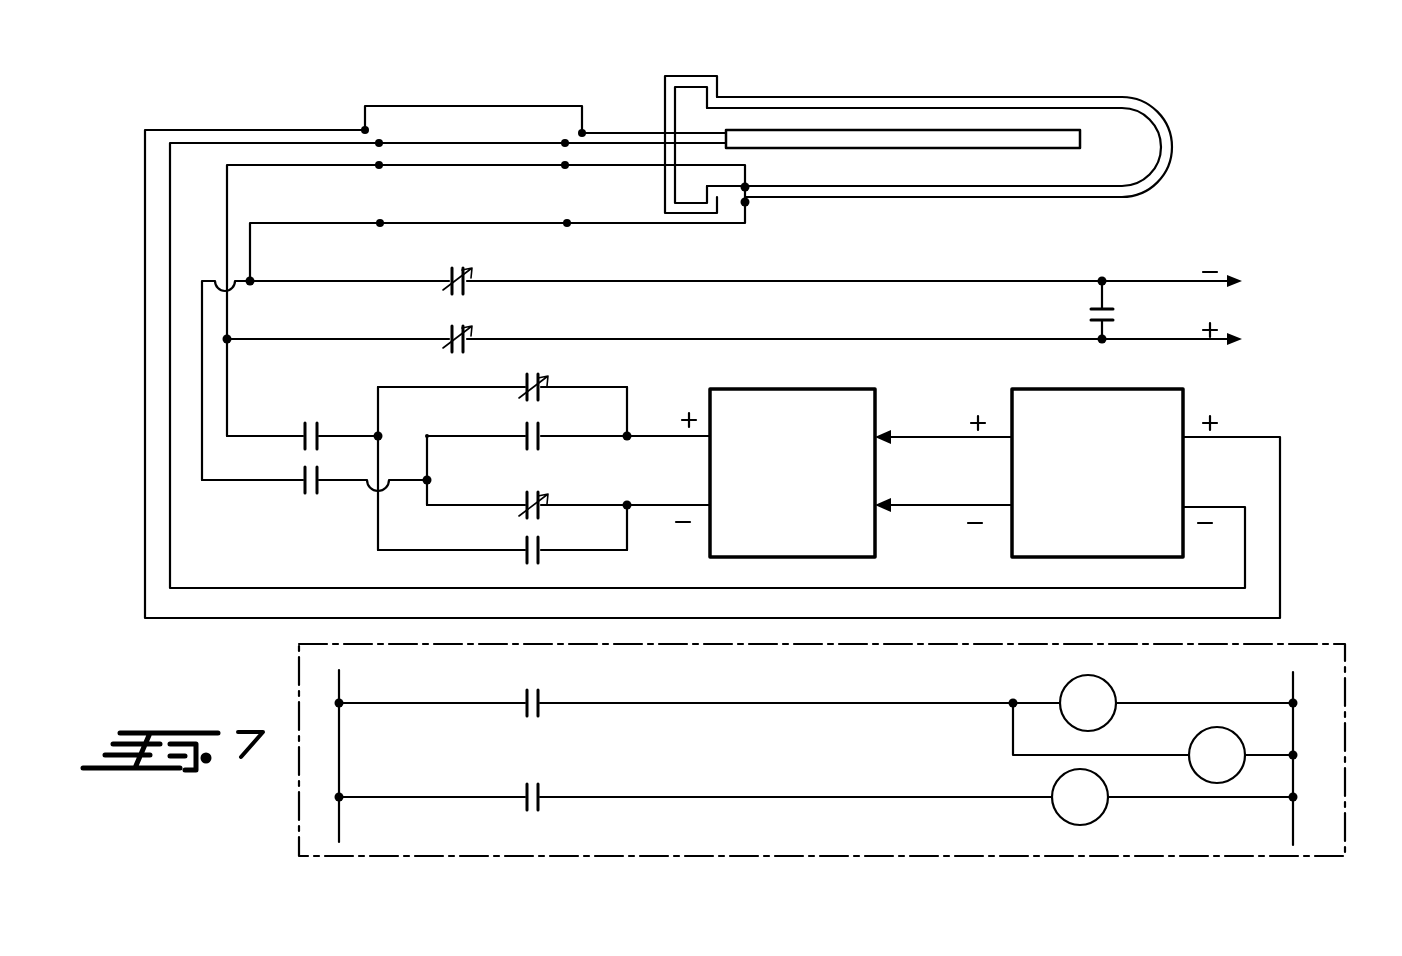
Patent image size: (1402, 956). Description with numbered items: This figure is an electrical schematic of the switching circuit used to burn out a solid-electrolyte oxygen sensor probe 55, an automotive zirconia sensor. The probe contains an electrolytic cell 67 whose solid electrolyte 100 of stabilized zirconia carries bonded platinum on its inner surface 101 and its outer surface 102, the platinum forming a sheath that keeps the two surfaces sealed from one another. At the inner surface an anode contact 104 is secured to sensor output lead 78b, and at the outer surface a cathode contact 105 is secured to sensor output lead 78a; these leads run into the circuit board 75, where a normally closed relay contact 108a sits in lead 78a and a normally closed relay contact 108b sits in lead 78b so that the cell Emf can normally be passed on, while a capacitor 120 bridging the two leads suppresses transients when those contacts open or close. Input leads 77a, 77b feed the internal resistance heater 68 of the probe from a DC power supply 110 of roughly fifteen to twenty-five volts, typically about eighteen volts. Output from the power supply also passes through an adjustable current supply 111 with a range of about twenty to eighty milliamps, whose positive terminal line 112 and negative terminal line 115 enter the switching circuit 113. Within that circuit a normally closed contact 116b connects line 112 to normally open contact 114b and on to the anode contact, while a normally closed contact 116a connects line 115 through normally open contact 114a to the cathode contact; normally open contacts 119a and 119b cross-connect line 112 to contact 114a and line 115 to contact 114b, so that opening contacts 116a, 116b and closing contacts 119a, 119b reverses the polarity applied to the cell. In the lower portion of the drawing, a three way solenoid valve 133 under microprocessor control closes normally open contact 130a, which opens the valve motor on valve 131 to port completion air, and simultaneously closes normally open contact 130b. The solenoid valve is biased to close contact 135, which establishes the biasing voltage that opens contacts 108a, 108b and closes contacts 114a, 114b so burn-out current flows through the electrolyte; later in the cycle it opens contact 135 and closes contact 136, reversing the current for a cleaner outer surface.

The automotive oxygen sensor probe 55 is at (703, 66).
The electrolytic cell 67 is at (1125, 97).
The internal resistance heater 68 is at (838, 130).
The solid electrolyte 100 is at (997, 197).
The inner surface 101 is at (1081, 186).
The outer surface 102 is at (853, 198).
The anode contact 104 is at (749, 186).
The cathode contact 105 is at (748, 204).
The input lead 77a is at (614, 133).
The input lead 77b is at (406, 143).
The sensor output lead 78a is at (290, 225).
The sensor output lead 78b is at (408, 166).
The normally closed relay contact 108a is at (465, 270).
The normally closed relay contact 108b is at (465, 328).
The capacitor 120 is at (1092, 318).
The normally open contact relay 114a is at (305, 493).
The normally open contact relay 114b is at (300, 422).
The switching circuit 113 is at (455, 461).
The normally closed relay contact 116a is at (536, 494).
The normally closed contact relay 116b is at (539, 385).
The normally open contact relay 119a is at (533, 424).
The normally open relay contact 119b is at (533, 541).
The positive terminal line 112 is at (655, 432).
The negative terminal line 115 is at (652, 512).
The adjustable current supply 111 is at (801, 488).
The DC power supply 110 is at (1096, 488).
The circuit board 75 is at (340, 748).
The contact 135 is at (540, 697).
The contact 136 is at (540, 790).
The normally open contact 130a is at (1108, 690).
The normally open contact 130b is at (1105, 815).
The valve 131 is at (1195, 745).
The three way solenoid valve 133 is at (1296, 740).